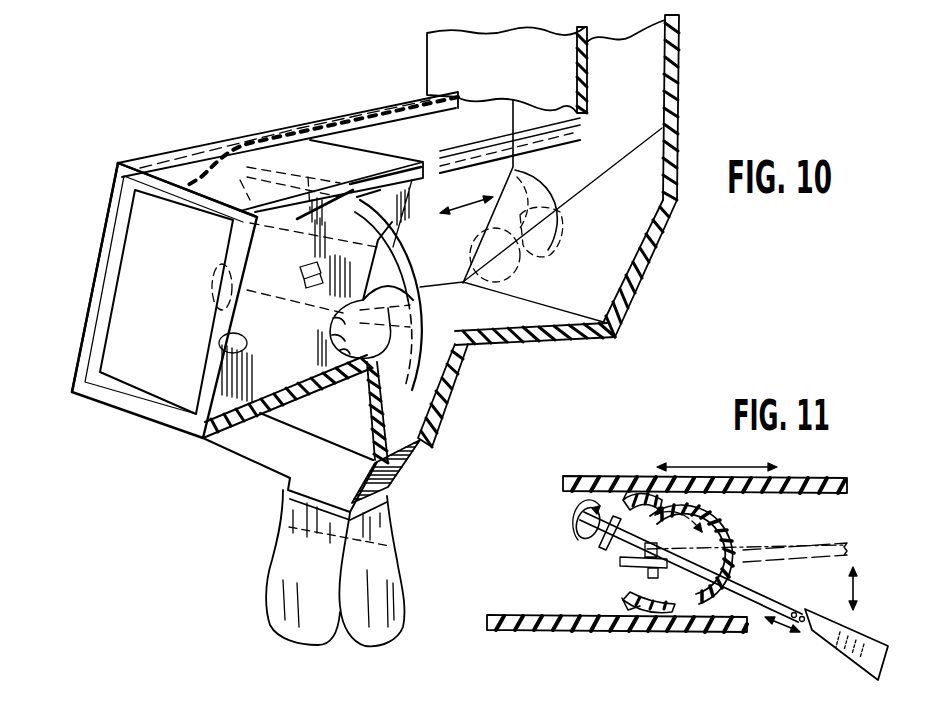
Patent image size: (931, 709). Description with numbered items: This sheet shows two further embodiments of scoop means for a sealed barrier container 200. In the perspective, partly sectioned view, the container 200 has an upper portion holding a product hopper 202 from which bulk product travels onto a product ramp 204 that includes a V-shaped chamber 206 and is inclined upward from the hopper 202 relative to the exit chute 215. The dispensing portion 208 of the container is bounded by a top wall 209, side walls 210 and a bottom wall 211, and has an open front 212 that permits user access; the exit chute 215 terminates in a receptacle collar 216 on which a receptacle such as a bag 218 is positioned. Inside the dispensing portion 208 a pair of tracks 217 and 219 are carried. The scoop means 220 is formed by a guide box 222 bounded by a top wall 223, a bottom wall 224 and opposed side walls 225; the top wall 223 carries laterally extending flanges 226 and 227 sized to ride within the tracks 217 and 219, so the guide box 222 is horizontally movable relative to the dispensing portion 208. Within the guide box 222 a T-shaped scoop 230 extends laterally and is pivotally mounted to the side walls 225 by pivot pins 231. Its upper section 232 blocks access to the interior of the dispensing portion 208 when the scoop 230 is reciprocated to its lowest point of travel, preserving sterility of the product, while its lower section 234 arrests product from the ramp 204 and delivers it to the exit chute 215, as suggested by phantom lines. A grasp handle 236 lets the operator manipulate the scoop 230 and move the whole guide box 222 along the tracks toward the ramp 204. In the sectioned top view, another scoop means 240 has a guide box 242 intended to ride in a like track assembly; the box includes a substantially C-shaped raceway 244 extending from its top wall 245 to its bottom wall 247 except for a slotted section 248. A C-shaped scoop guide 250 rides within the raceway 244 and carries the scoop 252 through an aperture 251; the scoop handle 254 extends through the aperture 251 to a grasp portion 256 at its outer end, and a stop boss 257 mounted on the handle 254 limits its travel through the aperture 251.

In FIG. 10, the sealed barrier container 200 is at (681, 80).
In FIG. 10, the product hopper 202 is at (640, 47).
In FIG. 10, the product ramp 204 is at (588, 340).
In FIG. 10, the V-shaped chamber 206 is at (603, 317).
In FIG. 10, the dispensing portion 208 is at (167, 138).
In FIG. 10, the top wall 209 is at (190, 143).
In FIG. 10, the side walls 210 is at (107, 210).
In FIG. 10, the bottom wall 211 is at (193, 430).
In FIG. 10, the open front 212 is at (110, 286).
In FIG. 10, the exit chute 215 is at (417, 424).
In FIG. 10, the receptacle collar 216 is at (383, 494).
In FIG. 10, the track 217 is at (458, 152).
In FIG. 10, the bag 218 is at (287, 548).
In FIG. 10, the track 219 is at (580, 140).
In FIG. 10, the scoop means 220 is at (413, 258).
In FIG. 10, the guide box 222 is at (188, 213).
In FIG. 10, the top wall 223 is at (157, 193).
In FIG. 10, the bottom wall 224 is at (143, 378).
In FIG. 10, the side walls 225 is at (127, 260).
In FIG. 10, the flange 226 is at (118, 162).
In FIG. 10, the flange 227 is at (240, 213).
In FIG. 10, the scoop 230 is at (433, 307).
In FIG. 10, the pivot pins 231 is at (300, 365).
In FIG. 10, the upper section 232 is at (347, 228).
In FIG. 10, the lower section 234 is at (438, 335).
In FIG. 10, the grasp handle 236 is at (312, 200).
In FIG. 11, the scoop means 240 is at (742, 563).
In FIG. 11, the guide box 242 is at (783, 473).
In FIG. 11, the C-shaped raceway 244 is at (708, 497).
In FIG. 11, the top wall 245 is at (623, 475).
In FIG. 11, the bottom wall 247 is at (590, 632).
In FIG. 11, the slotted section 248 is at (728, 540).
In FIG. 11, the C-shaped scoop guide 250 is at (655, 597).
In FIG. 11, the aperture 251 is at (667, 618).
In FIG. 11, the scoop 252 is at (855, 657).
In FIG. 11, the scoop handle 254 is at (757, 607).
In FIG. 11, the grasp portion 256 is at (577, 521).
In FIG. 11, the stop boss 257 is at (600, 537).